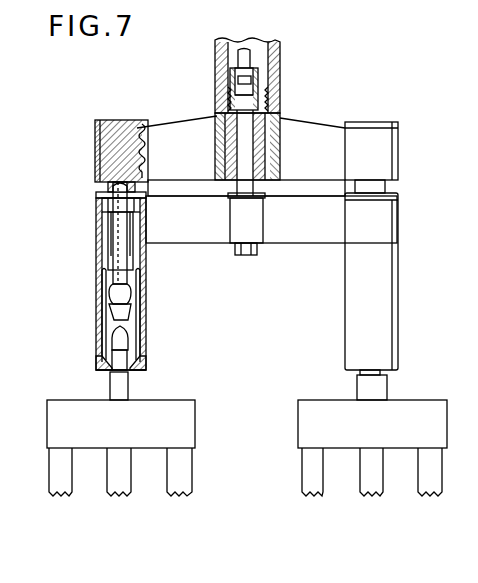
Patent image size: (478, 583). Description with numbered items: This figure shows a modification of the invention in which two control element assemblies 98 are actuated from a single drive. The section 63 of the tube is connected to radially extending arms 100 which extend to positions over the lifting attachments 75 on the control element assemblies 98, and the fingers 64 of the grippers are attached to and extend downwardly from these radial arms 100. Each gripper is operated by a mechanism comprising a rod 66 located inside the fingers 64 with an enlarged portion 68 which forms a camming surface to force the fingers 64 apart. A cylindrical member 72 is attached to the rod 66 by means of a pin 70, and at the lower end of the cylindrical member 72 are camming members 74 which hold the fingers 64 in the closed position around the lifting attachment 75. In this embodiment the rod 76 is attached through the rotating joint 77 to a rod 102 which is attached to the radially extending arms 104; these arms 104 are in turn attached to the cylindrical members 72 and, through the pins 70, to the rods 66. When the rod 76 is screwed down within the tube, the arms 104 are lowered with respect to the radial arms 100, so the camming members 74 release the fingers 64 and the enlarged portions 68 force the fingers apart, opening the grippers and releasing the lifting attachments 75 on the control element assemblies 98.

The section of the tube 63 is at (282, 50).
The fingers 64 is at (110, 333).
The rod 66 is at (118, 231).
The enlarged portion 68 is at (117, 295).
The pin 70 is at (97, 205).
The cylindrical member 72 is at (360, 325).
The camming members 74 is at (98, 359).
The lifting attachment 75 is at (120, 343).
The rod 76 is at (217, 58).
The rotating joint 77 is at (245, 65).
The control element assemblies 98 is at (58, 470).
The radially extending arms 100 is at (182, 93).
The rod 102 is at (243, 141).
The radially extending arms 104 is at (192, 231).